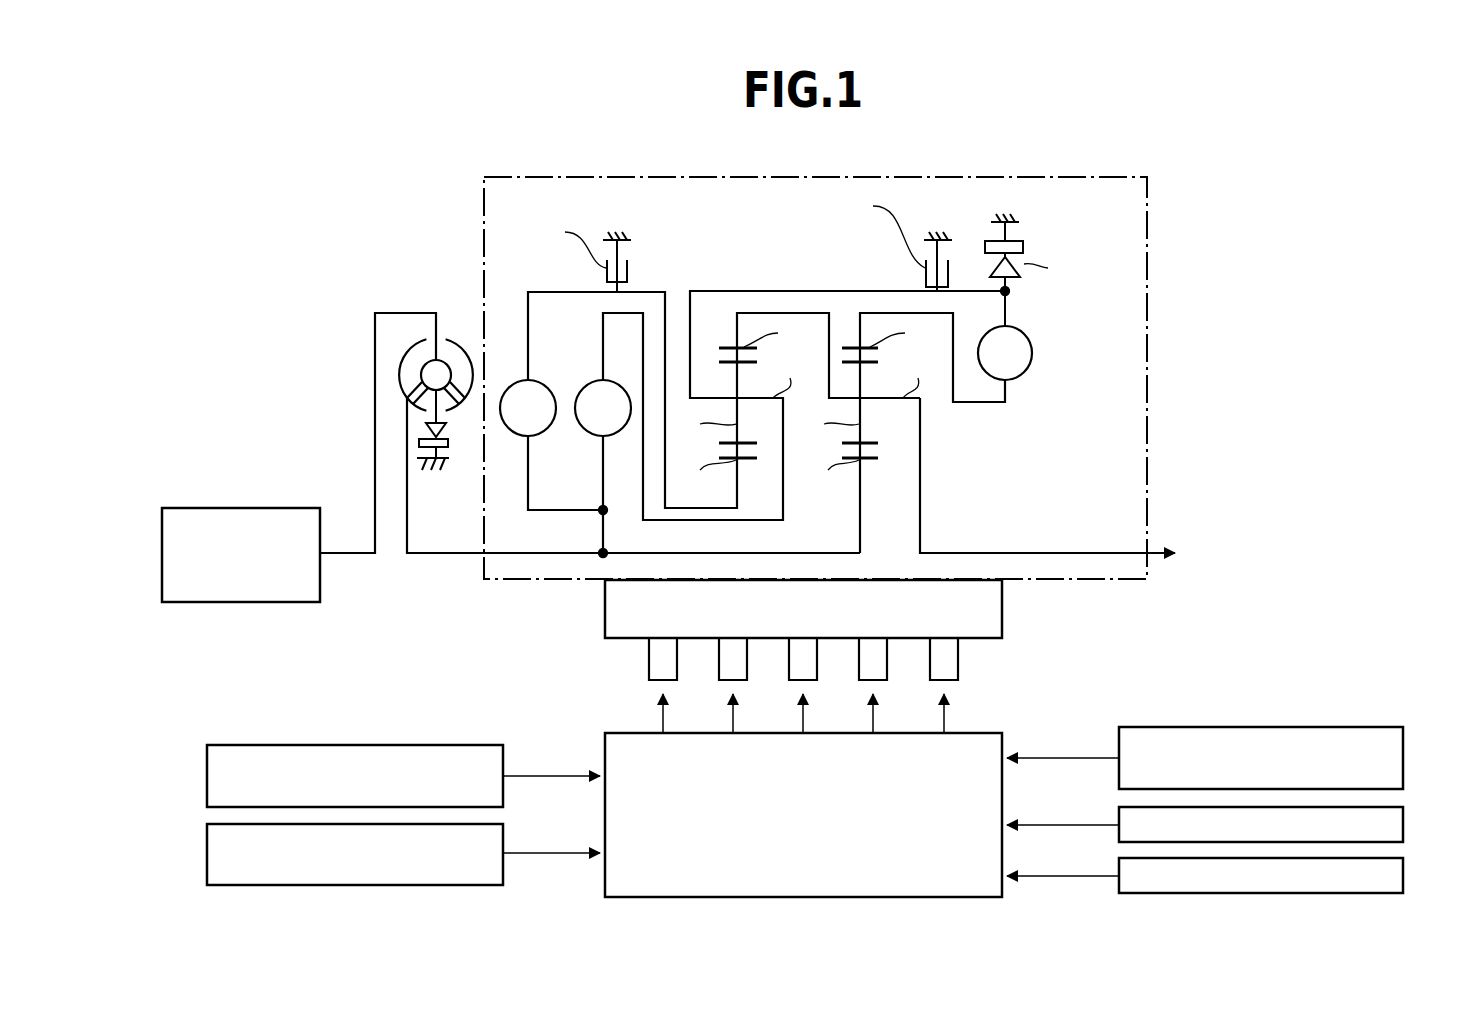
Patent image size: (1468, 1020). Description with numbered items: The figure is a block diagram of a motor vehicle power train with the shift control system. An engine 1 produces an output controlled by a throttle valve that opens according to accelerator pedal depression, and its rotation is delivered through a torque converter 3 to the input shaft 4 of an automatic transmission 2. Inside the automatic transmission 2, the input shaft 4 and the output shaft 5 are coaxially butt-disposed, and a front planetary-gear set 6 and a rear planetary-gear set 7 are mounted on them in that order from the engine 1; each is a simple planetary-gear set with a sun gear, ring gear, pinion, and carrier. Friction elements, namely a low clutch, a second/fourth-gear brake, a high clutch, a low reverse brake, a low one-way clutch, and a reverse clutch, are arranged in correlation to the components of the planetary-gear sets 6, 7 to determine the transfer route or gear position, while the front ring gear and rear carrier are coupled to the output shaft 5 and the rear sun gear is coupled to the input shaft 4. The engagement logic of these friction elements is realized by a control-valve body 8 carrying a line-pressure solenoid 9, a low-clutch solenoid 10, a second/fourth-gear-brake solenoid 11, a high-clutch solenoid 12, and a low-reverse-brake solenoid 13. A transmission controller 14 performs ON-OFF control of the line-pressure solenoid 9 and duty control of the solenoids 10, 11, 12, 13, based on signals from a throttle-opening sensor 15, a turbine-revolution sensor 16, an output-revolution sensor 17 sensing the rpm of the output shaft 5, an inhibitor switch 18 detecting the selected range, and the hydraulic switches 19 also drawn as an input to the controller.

The engine 1 is at (216, 508).
The automatic transmission 2 is at (1165, 222).
The torque converter 3 is at (448, 325).
The input shaft 4 is at (441, 556).
The output shaft 5 is at (1040, 552).
The front planetary-gear set 6 is at (718, 310).
The rear planetary-gear set 7 is at (836, 308).
The control-valve body 8 is at (1003, 598).
The line-pressure solenoid 9 is at (648, 662).
The low-clutch solenoid 10 is at (718, 662).
The second/fourth-gear-brake solenoid 11 is at (788, 662).
The high-clutch solenoid 12 is at (858, 662).
The low-reverse-brake solenoid 13 is at (929, 662).
The transmission controller 14 is at (968, 733).
The throttle-opening sensor 15 is at (207, 773).
The turbine-revolution sensor 16 is at (207, 853).
The output-revolution sensor 17 is at (1404, 757).
The inhibitor switch 18 is at (1404, 823).
The hydraulic switches 19 is at (1404, 873).